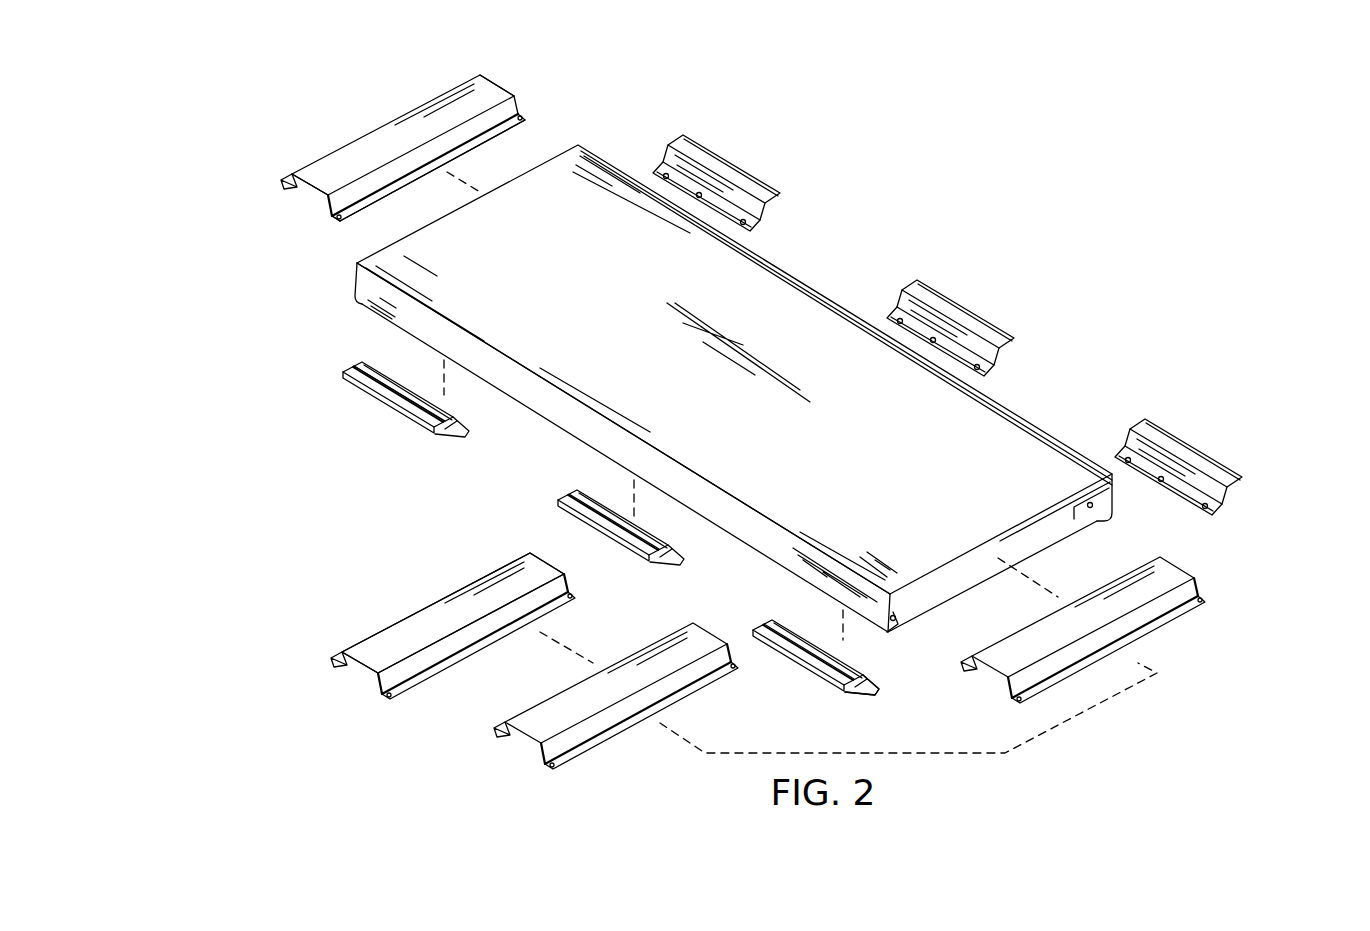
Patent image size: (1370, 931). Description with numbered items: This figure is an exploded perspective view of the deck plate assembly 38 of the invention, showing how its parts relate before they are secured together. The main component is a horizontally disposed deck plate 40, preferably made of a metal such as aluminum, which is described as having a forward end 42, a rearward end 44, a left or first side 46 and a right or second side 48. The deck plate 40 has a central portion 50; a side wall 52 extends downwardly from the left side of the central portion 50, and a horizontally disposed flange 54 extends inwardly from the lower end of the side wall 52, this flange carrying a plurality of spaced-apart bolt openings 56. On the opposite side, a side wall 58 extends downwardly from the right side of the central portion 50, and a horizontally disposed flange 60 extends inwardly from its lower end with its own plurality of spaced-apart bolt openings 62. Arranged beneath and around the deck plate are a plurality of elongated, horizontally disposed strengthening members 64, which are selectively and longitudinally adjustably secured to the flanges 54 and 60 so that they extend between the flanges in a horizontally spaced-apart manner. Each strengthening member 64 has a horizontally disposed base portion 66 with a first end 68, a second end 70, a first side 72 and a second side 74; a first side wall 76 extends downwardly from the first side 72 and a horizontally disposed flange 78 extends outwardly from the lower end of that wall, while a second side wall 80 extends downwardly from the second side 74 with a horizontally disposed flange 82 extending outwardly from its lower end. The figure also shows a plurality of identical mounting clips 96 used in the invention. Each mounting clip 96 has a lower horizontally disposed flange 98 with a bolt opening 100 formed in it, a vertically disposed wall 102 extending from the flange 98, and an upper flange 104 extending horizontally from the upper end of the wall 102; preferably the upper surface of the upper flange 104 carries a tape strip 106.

The deck plate assembly 38 is at (840, 280).
The deck plate 40 is at (757, 277).
The forward end 42 is at (383, 248).
The rearward end 44 is at (1030, 528).
The left or first side 46 is at (538, 377).
The right or second side 48 is at (900, 342).
The central portion 50 is at (805, 460).
The side wall 52 is at (795, 548).
The flange 54 is at (897, 624).
The bolt openings 56 is at (897, 604).
The side wall 58 is at (1117, 500).
The flange 60 is at (1103, 520).
The bolt openings 62 is at (1091, 510).
The strengthening members 64 is at (356, 119).
The base portion 66 is at (450, 103).
The first end 68 is at (307, 208).
The second end 70 is at (497, 92).
The first side 72 is at (320, 143).
The second side 74 is at (438, 180).
The first side wall 76 is at (313, 175).
The flange 78 is at (288, 188).
The second side wall 80 is at (515, 107).
The flange 82 is at (507, 137).
The mounting clips 96 is at (747, 155).
The lower flange 98 is at (987, 373).
The bolt opening 100 is at (932, 338).
The wall 102 is at (997, 358).
The upper flange 104 is at (930, 278).
The tape strip 106 is at (943, 298).